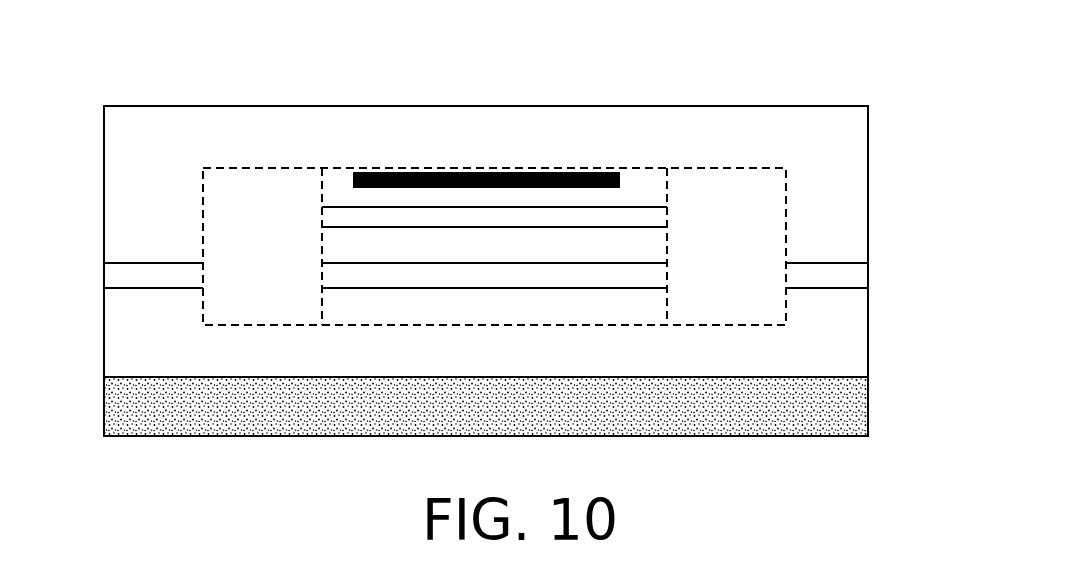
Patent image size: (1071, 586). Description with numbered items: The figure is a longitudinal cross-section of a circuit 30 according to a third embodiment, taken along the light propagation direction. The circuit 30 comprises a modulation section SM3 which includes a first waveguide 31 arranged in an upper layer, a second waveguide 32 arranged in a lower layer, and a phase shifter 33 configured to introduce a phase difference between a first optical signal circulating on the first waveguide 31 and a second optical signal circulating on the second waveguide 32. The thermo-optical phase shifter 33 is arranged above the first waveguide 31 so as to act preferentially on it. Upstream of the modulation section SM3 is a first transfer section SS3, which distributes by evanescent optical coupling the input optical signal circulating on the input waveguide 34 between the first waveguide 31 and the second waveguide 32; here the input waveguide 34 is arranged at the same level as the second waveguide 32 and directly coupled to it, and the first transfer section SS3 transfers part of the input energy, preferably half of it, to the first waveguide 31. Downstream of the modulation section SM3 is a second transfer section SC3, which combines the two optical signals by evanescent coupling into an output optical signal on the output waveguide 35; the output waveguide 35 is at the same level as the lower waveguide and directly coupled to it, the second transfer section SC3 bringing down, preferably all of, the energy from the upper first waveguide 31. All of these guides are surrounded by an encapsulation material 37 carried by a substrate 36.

The circuit 30 is at (860, 78).
The first waveguide 31 is at (630, 225).
The second waveguide 32 is at (598, 275).
The phase shifter 33 is at (527, 170).
The input waveguide 34 is at (135, 279).
The output waveguide 35 is at (850, 277).
The substrate 36 is at (175, 423).
The encapsulation material 37 is at (850, 325).
The first transfer section SS3 is at (203, 301).
The second transfer section SC3 is at (737, 325).
The modulation section SM3 is at (370, 325).